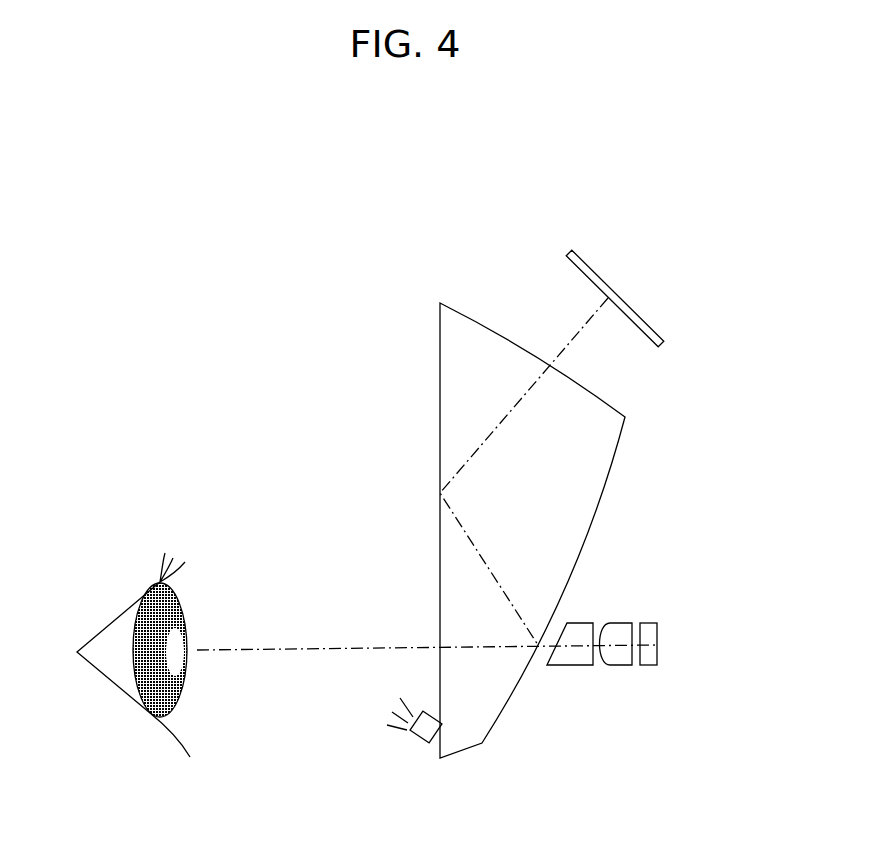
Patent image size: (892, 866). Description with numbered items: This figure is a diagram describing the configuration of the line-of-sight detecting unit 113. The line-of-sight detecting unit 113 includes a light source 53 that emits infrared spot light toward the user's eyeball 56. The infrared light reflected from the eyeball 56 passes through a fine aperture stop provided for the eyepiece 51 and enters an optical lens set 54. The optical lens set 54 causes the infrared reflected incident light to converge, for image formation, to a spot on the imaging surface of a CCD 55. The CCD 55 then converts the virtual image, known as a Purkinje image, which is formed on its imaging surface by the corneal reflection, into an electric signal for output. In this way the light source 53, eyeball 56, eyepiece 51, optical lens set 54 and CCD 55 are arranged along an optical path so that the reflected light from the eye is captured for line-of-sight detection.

The line-of-sight detecting unit 113 is at (387, 275).
The eyepiece 51 is at (630, 448).
The light source 53 is at (417, 747).
The optical lens set 54 is at (662, 663).
The CCD 55 is at (658, 635).
The eyeball 56 is at (107, 610).